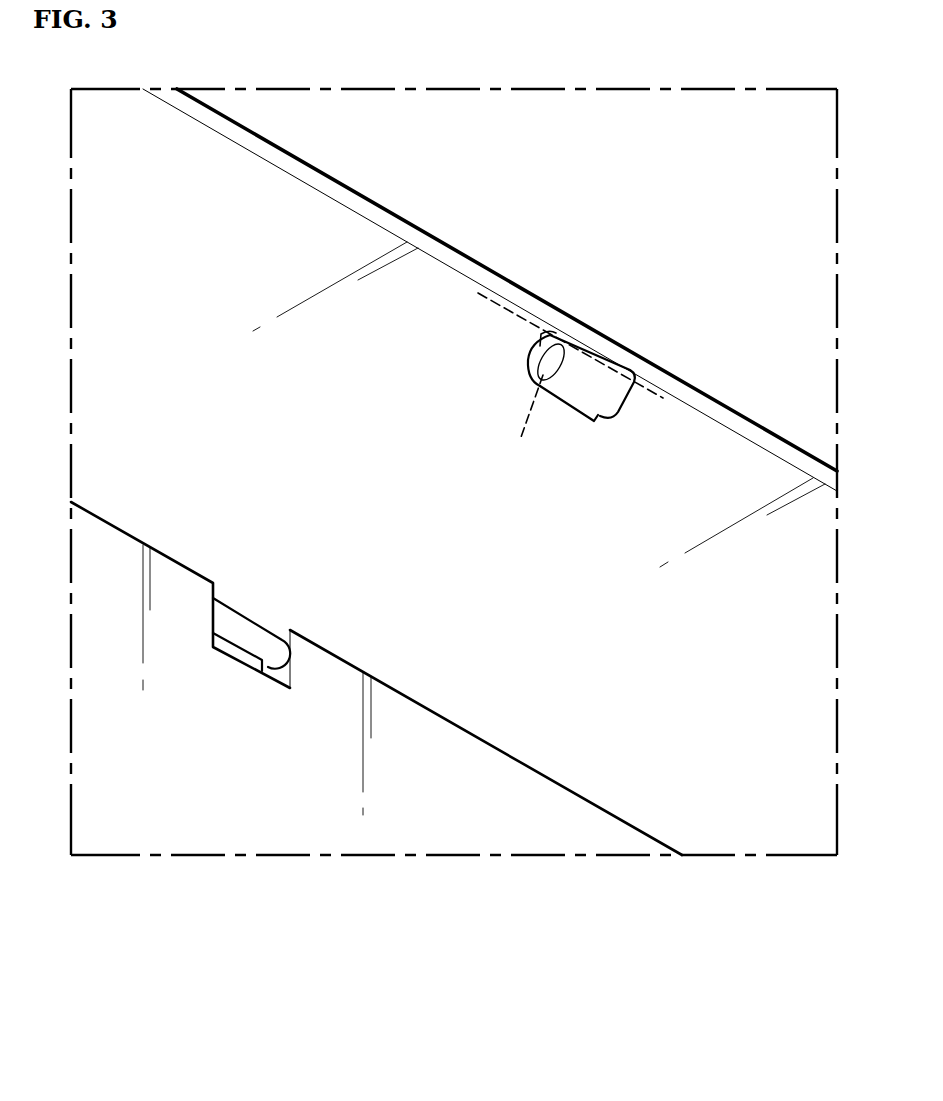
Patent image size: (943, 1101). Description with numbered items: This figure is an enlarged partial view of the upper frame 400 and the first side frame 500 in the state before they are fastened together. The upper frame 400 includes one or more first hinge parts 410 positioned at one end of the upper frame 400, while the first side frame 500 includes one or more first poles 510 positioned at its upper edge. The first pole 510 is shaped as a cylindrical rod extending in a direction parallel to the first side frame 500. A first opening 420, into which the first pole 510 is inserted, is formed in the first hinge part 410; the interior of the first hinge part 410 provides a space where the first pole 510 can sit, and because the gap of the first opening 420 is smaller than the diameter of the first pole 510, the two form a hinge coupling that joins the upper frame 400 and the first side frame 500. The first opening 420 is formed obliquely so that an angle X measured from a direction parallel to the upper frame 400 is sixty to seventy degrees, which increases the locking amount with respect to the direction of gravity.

The upper frame 400 is at (450, 246).
The first hinge part 410 is at (620, 408).
The first opening 420 is at (548, 396).
The first side frame 500 is at (480, 832).
The first pole 510 is at (248, 629).
The angle X is at (540, 342).